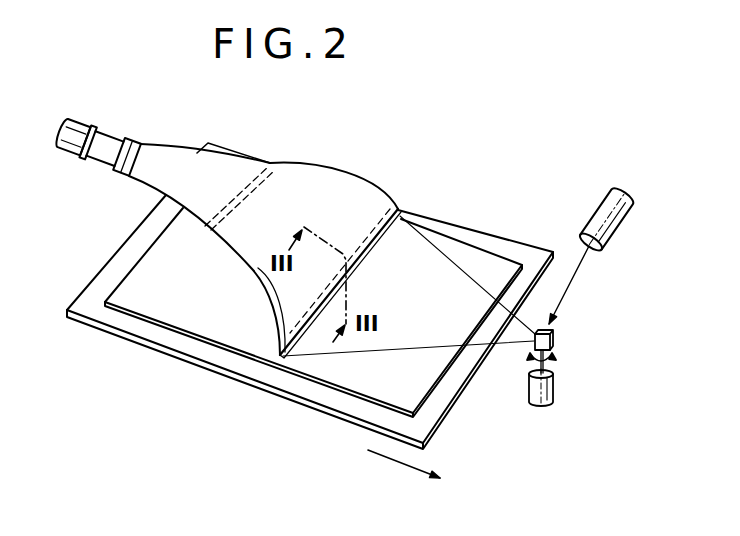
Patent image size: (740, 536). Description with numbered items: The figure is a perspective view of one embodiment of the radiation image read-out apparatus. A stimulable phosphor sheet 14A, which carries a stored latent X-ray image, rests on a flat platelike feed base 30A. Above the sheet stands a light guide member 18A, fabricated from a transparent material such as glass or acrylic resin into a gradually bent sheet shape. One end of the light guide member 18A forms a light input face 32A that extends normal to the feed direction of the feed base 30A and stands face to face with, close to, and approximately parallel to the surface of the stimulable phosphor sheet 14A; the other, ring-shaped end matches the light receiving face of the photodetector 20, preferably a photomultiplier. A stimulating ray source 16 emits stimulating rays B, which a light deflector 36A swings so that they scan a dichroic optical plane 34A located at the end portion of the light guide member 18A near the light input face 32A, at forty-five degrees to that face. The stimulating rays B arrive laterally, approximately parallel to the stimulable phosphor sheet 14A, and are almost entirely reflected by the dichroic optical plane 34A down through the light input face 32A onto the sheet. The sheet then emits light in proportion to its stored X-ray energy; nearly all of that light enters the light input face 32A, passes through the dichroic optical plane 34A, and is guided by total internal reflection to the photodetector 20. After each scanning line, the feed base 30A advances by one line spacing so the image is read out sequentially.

The photodetector 20 is at (121, 134).
The light guide member 18A is at (380, 184).
The stimulating ray source 16 is at (590, 216).
The stimulating rays B is at (570, 284).
The light deflector 36A is at (553, 341).
The feed base 30A is at (132, 341).
The stimulable phosphor sheet 14A is at (188, 331).
The light input face 32A is at (281, 358).
The dichroic optical plane 34A is at (292, 343).